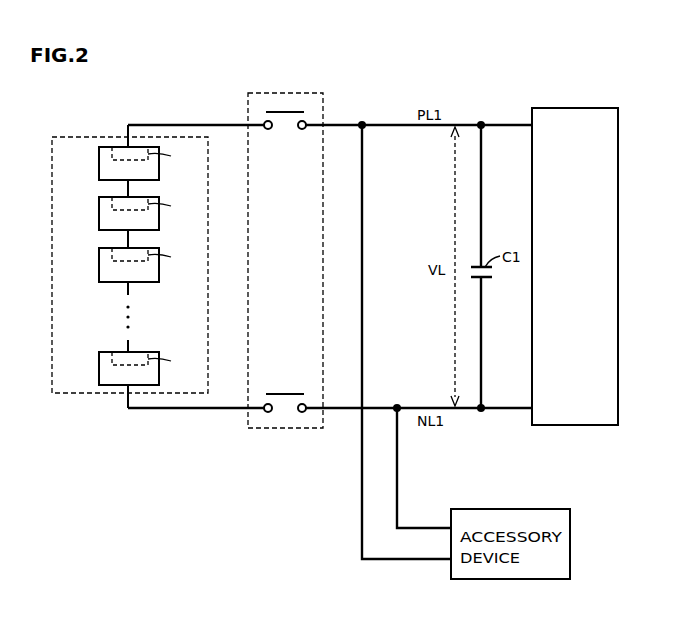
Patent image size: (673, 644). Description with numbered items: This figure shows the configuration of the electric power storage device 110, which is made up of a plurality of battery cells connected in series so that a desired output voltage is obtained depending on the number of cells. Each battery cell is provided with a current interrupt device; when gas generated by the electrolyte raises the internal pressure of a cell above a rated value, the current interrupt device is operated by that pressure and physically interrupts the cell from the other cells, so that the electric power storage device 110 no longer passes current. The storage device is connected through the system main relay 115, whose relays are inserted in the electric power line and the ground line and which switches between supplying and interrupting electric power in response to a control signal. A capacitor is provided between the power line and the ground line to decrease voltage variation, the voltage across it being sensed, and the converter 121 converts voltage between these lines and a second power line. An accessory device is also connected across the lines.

The electric power storage device 110 is at (73, 137).
The SMR 115 is at (313, 93).
The converter 121 is at (577, 108).